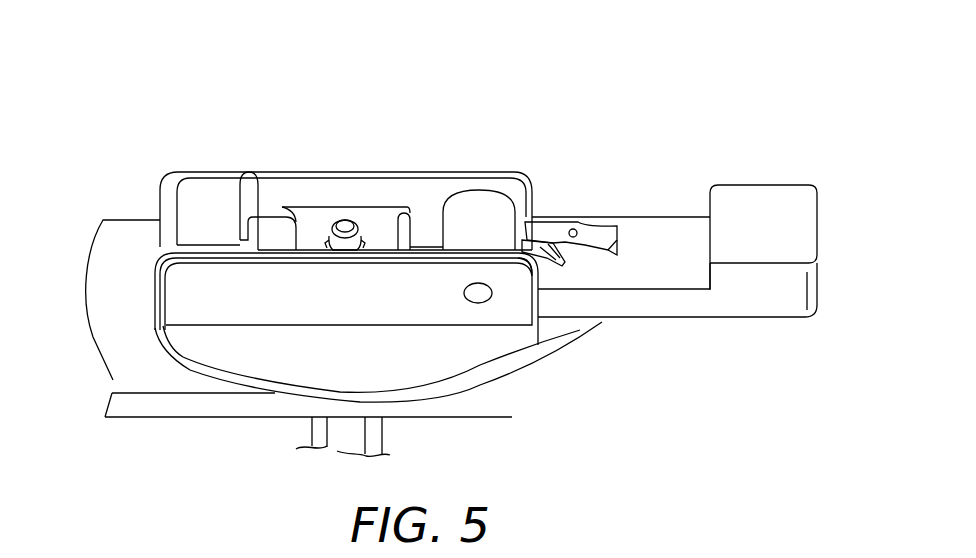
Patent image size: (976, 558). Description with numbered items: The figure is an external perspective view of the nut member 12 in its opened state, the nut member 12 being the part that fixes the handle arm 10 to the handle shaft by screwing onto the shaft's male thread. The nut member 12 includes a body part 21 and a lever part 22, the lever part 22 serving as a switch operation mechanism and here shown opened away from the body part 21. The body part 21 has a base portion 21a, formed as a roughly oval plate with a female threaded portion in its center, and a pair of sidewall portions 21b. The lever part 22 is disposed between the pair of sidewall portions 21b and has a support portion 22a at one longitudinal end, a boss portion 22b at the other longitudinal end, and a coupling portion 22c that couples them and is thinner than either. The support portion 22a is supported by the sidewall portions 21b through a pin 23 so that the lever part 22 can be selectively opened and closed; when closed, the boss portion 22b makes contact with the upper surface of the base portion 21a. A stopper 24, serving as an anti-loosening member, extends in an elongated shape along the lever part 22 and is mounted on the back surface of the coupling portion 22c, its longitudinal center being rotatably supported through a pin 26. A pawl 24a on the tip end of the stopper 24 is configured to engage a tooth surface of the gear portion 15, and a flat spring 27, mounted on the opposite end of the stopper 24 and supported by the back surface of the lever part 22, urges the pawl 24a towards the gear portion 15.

The handle arm 10 is at (545, 398).
The nut member 12 is at (470, 140).
The gear portion 15 is at (363, 220).
The body part 21 is at (168, 354).
The base portion 21a is at (218, 353).
The sidewall portions 21b is at (192, 280).
The lever part 22 is at (826, 216).
The support portion 22a is at (483, 208).
The boss portion 22b is at (767, 203).
The coupling portion 22c is at (650, 303).
The pin 23 is at (480, 300).
The stopper 24 is at (603, 215).
The pawl 24a is at (620, 250).
The pin 26 is at (573, 229).
The flat spring 27 is at (545, 258).